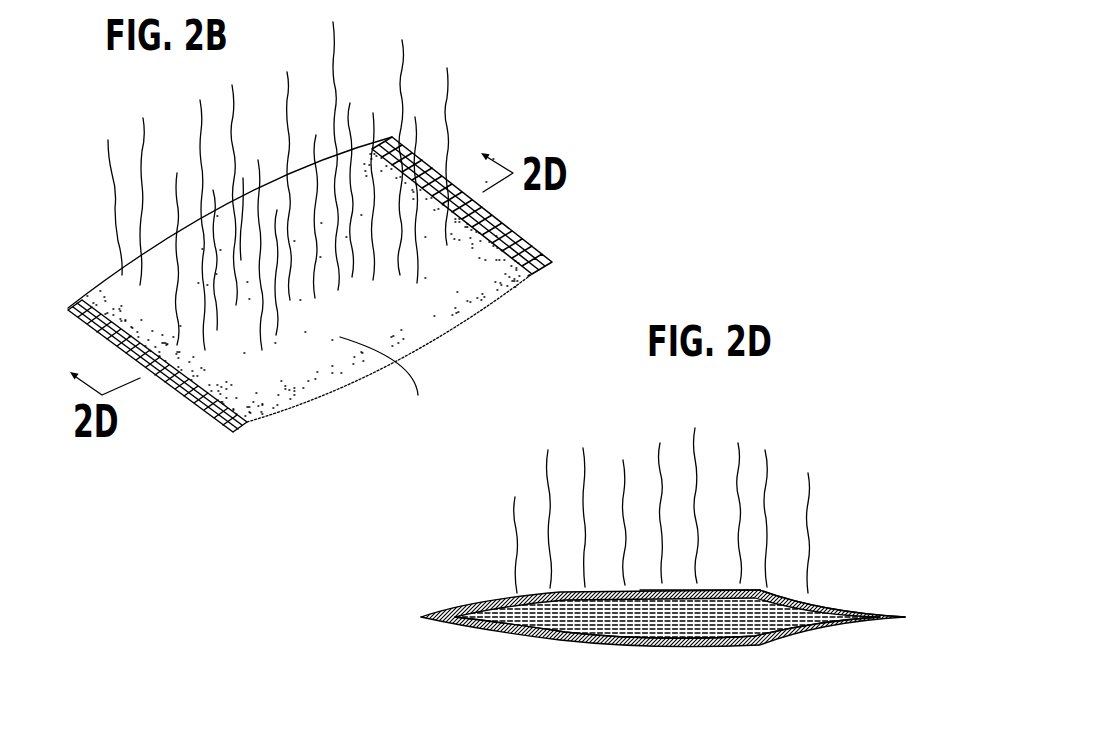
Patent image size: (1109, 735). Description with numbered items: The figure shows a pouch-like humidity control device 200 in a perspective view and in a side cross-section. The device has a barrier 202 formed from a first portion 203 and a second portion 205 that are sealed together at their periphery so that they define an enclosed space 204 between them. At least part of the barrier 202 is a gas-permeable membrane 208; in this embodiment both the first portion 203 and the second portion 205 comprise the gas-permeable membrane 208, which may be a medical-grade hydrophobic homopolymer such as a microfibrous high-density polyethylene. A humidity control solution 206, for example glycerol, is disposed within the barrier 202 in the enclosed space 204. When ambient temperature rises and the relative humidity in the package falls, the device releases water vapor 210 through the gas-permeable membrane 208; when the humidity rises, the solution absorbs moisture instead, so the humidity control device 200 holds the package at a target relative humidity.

In FIG. 2B, the humidity control device 200 is at (530, 96).
In FIG. 2D, the humidity control device 200 is at (797, 390).
In FIG. 2B, the barrier 202 is at (527, 275).
In FIG. 2D, the barrier 202 is at (813, 605).
In FIG. 2B, the first portion 203 is at (390, 389).
In FIG. 2D, the first portion 203 is at (488, 575).
In FIG. 2D, the enclosed space 204 is at (667, 618).
In FIG. 2B, the second portion 205 is at (312, 442).
In FIG. 2D, the second portion 205 is at (487, 665).
In FIG. 2D, the humidity control solution 206 is at (640, 632).
In FIG. 2B, the gas-permeable membrane 208 is at (378, 282).
In FIG. 2D, the gas-permeable membrane 208 is at (660, 577).
In FIG. 2B, the water vapor 210 is at (113, 178).